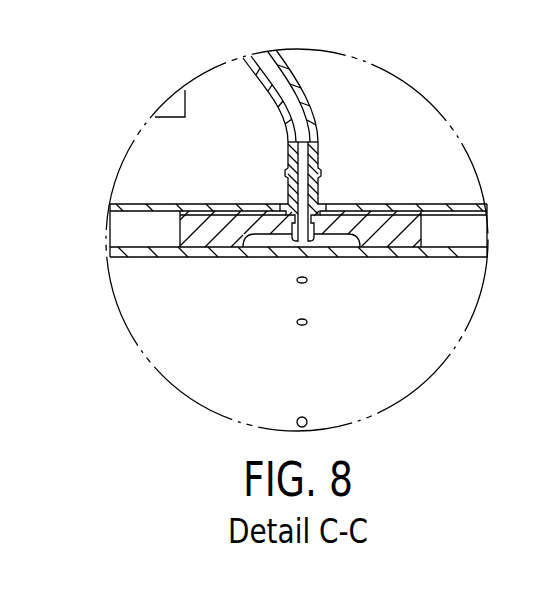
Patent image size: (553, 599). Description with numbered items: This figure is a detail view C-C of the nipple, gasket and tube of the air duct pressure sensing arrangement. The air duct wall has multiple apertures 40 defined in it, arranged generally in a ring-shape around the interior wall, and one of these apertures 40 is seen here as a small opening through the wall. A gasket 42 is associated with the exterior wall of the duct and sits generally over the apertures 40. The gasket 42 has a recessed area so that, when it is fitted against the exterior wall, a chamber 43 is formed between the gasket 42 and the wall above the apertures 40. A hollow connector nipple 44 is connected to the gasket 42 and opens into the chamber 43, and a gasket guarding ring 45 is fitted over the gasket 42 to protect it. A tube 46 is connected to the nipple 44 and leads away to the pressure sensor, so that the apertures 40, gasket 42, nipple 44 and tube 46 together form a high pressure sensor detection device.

The apertures 40 is at (297, 322).
The gasket 42 is at (205, 232).
The chamber 43 is at (326, 238).
The hollow connector nipple 44 is at (316, 192).
The gasket guarding ring 45 is at (424, 216).
The tube 46 is at (316, 130).